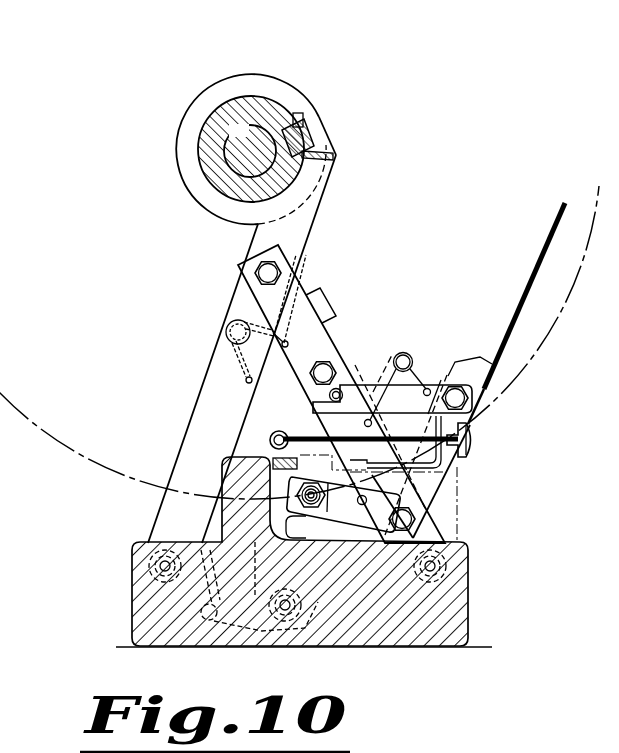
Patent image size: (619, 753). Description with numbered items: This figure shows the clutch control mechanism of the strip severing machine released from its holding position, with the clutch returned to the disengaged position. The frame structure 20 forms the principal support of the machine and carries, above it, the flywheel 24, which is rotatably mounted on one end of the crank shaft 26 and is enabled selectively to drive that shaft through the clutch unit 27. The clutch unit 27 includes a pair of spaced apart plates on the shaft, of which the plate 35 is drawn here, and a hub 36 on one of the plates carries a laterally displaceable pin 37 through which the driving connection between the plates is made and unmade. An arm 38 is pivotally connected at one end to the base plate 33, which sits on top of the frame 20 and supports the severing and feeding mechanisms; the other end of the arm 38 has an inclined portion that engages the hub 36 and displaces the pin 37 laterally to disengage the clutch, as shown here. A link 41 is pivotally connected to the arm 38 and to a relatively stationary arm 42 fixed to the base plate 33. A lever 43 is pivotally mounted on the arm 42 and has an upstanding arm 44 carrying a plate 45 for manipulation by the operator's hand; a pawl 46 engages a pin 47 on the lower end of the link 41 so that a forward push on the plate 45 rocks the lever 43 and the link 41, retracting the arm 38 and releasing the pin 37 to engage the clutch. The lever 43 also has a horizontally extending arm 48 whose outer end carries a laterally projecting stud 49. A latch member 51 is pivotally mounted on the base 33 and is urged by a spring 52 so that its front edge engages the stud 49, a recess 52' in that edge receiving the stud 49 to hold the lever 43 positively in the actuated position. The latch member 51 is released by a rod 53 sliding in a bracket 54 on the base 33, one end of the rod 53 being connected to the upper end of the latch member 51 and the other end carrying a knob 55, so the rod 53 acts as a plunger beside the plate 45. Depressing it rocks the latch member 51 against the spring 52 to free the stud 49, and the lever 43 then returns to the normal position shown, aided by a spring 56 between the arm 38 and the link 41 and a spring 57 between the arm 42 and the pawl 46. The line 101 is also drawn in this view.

The frame structure 20 is at (481, 647).
The flywheel 24 is at (87, 458).
The crank shaft 26 is at (239, 136).
The clutch unit 27 is at (308, 89).
The base plate 33 is at (466, 603).
The clutch plate 35 is at (268, 85).
The hub 36 is at (272, 108).
The pin 37 is at (312, 129).
The arm 38 is at (305, 233).
The link 41 is at (299, 283).
The stationary arm 42 is at (425, 533).
The lever 43 is at (437, 503).
The upstanding arm 44 is at (463, 362).
The plate 45 is at (517, 306).
The pawl 46 is at (441, 380).
The pin 47 is at (338, 391).
The horizontally extending arm 48 is at (365, 523).
The stud 49 is at (326, 500).
The latch member 51 is at (268, 436).
The spring 52 is at (249, 604).
The recess 52' is at (310, 527).
The rod 53 is at (400, 437).
The bracket 54 is at (443, 458).
The knob 55 is at (478, 434).
The spring 56 is at (228, 362).
The spring 57 is at (427, 355).
The axis line 101 is at (458, 474).